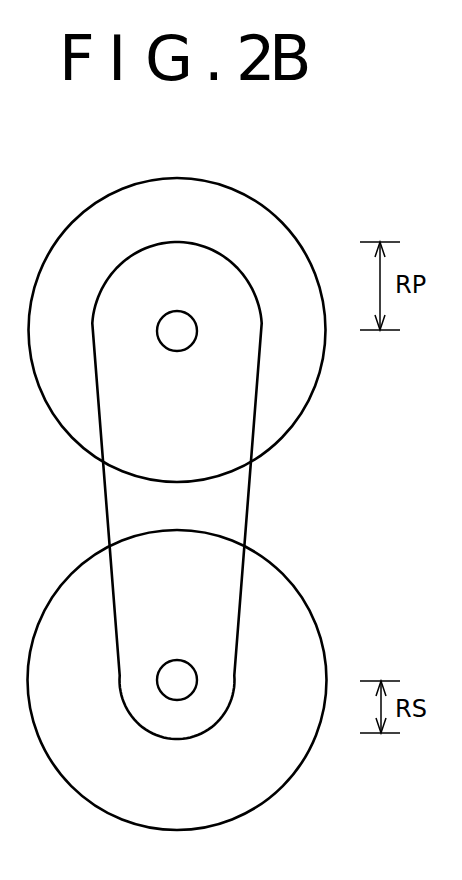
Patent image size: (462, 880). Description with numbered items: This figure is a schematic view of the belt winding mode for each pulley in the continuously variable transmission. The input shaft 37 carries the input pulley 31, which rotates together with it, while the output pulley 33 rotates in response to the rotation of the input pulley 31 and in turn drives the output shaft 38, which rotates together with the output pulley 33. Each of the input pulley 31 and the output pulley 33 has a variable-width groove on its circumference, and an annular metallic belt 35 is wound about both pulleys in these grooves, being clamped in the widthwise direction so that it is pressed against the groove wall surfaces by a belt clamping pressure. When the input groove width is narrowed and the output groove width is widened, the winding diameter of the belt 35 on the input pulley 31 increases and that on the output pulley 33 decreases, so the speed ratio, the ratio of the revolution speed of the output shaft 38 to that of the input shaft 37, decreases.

The input pulley 31 is at (232, 187).
The output pulley 33 is at (297, 585).
The belt 35 is at (250, 497).
The input shaft 37 is at (176, 337).
The output shaft 38 is at (177, 672).